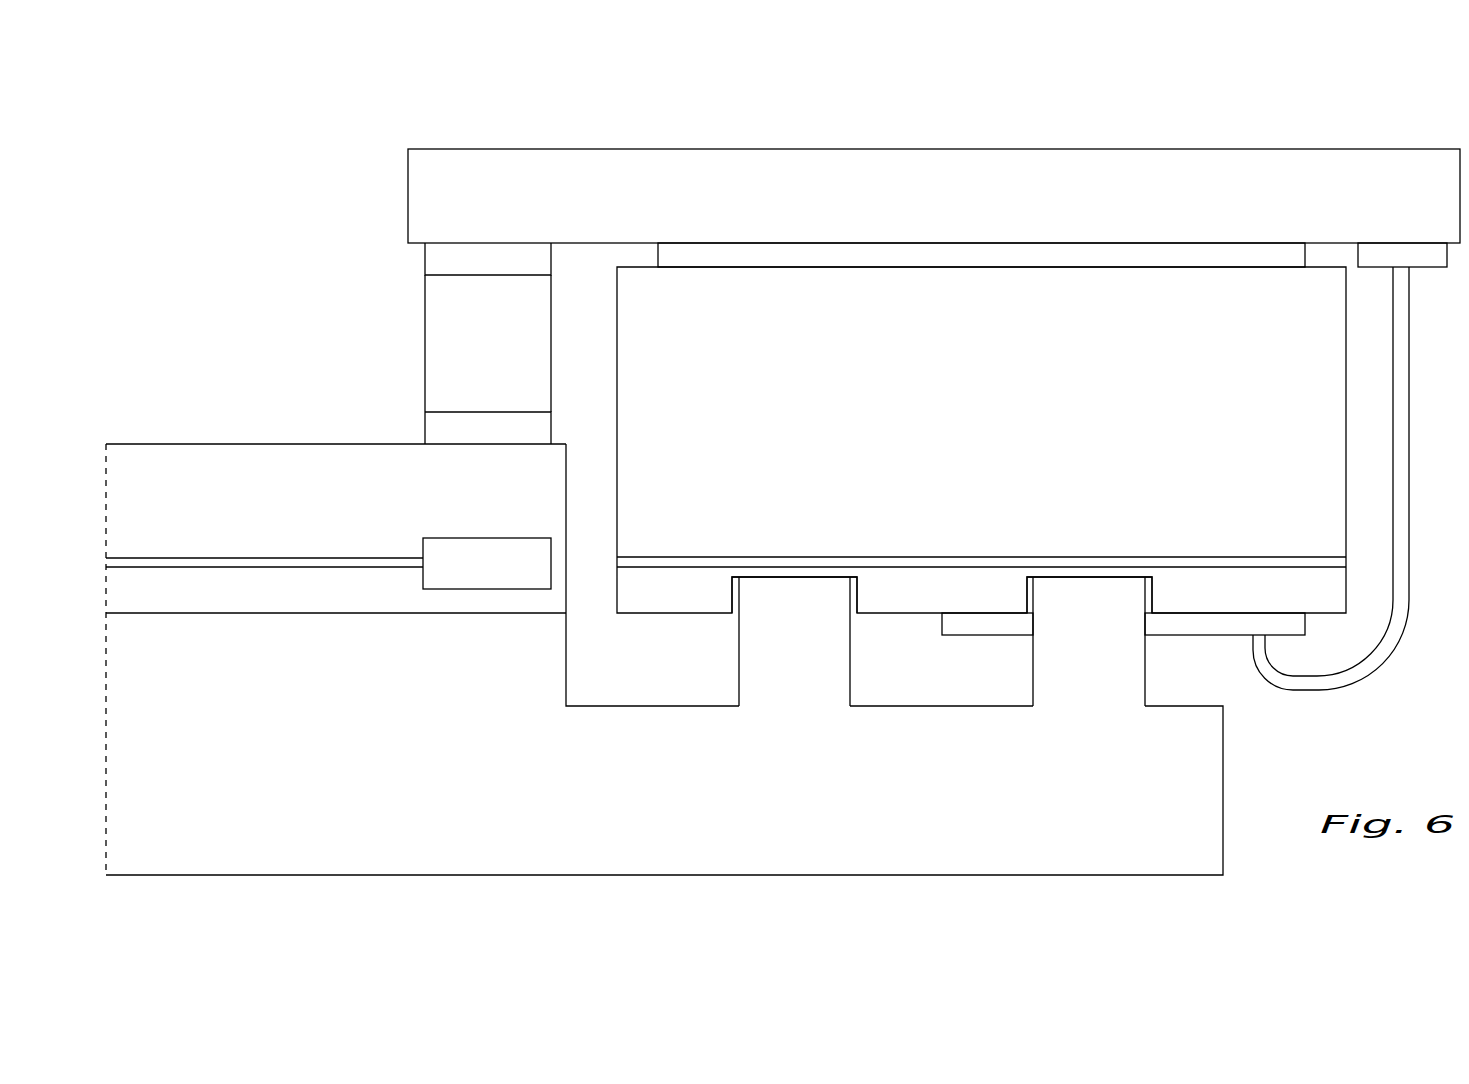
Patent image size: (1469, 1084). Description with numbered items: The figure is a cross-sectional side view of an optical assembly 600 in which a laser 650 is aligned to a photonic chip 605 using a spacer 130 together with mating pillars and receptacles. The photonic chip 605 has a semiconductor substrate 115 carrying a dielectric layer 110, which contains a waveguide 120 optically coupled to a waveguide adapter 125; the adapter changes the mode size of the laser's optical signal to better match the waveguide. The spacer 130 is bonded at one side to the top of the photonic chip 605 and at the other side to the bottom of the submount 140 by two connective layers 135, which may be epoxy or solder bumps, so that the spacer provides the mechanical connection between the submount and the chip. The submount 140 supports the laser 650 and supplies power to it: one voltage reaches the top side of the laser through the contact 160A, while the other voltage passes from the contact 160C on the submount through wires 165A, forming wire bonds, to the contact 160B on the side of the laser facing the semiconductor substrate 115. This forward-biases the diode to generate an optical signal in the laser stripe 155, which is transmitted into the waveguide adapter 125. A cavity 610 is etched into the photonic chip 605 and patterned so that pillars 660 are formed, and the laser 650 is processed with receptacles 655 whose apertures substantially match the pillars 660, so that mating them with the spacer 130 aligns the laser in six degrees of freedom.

The optical assembly 600 is at (470, 77).
The submount 140 is at (425, 224).
The connective layers 135 is at (430, 259).
The spacer 130 is at (447, 362).
The laser 650 is at (1063, 290).
The laser stripe 155 is at (943, 555).
The receptacles 655 is at (1087, 590).
The contact 160A is at (748, 252).
The contact 160B is at (1015, 630).
The contact 160C is at (1425, 250).
The wires 165A is at (1383, 652).
The photonic chip 605 is at (1230, 896).
The dielectric layer 110 is at (330, 602).
The waveguide 120 is at (378, 555).
The waveguide adapter 125 is at (468, 548).
The semiconductor substrate 115 is at (593, 878).
The cavity 610 is at (643, 663).
The pillars 660 is at (797, 663).